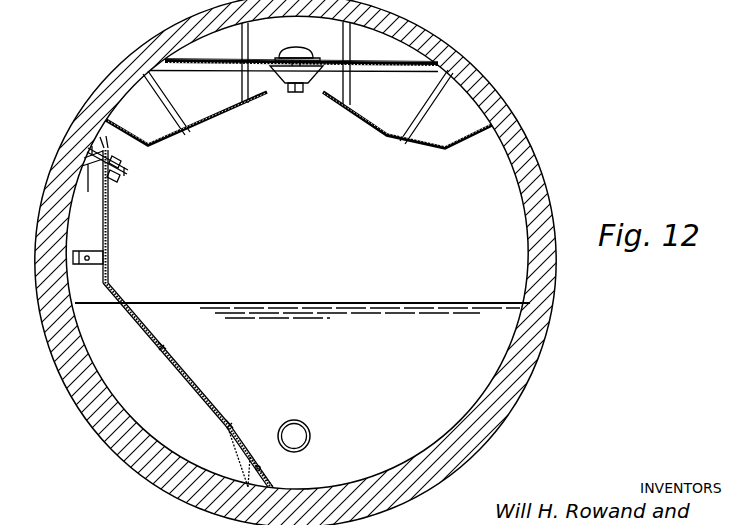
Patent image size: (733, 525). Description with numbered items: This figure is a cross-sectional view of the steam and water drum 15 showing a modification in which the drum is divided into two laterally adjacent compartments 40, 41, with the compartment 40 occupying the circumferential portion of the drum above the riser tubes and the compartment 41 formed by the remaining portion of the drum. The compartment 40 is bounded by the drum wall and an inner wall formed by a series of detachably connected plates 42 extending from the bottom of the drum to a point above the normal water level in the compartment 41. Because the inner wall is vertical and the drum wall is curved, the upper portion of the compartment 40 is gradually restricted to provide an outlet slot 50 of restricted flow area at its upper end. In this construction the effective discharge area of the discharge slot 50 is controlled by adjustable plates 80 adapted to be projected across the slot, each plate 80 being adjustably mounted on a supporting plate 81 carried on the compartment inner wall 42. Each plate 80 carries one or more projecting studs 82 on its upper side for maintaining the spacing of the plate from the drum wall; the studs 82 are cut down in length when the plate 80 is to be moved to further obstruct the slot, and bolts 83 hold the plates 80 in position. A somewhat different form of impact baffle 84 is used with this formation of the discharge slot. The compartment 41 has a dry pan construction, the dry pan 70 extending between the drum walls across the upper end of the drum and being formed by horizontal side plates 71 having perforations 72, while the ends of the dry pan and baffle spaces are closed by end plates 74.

The steam and water drum 15 is at (507, 107).
The compartment 40 is at (158, 396).
The compartment 41 is at (418, 266).
The plates 42 is at (186, 362).
The outlet slot 50 is at (90, 150).
The dry pan 70 is at (325, 67).
The horizontal side plates 71 is at (225, 65).
The perforations 72 is at (178, 66).
The end plates 74 is at (392, 76).
The adjustable plates 80 is at (98, 160).
The supporting plate 81 is at (116, 180).
The projecting studs 82 is at (100, 137).
The bolts 83 is at (123, 162).
The impact baffle 84 is at (210, 128).